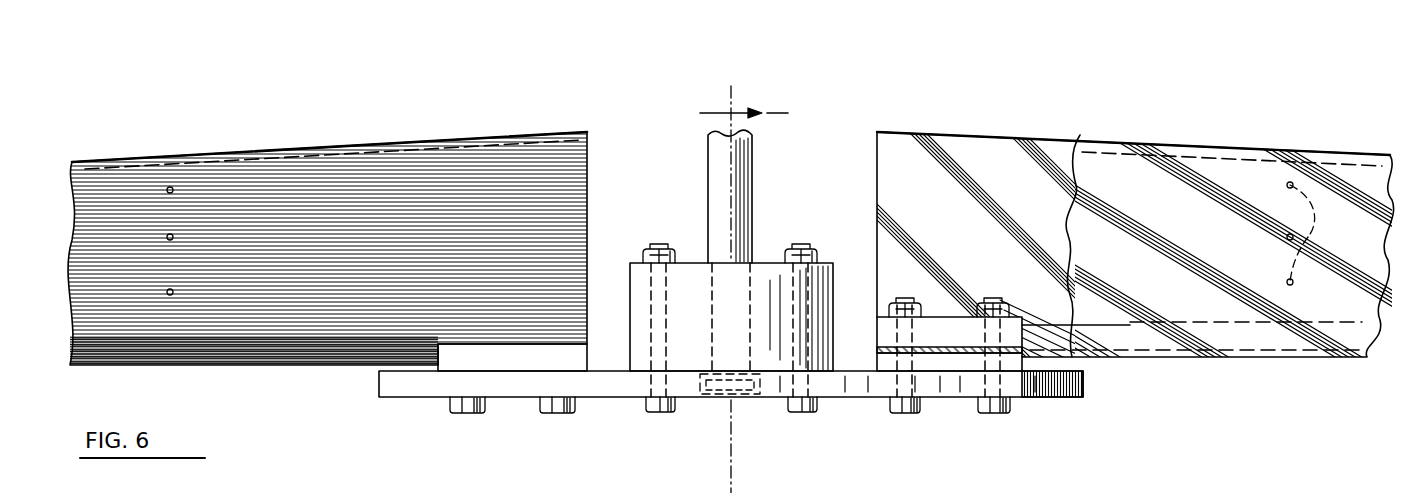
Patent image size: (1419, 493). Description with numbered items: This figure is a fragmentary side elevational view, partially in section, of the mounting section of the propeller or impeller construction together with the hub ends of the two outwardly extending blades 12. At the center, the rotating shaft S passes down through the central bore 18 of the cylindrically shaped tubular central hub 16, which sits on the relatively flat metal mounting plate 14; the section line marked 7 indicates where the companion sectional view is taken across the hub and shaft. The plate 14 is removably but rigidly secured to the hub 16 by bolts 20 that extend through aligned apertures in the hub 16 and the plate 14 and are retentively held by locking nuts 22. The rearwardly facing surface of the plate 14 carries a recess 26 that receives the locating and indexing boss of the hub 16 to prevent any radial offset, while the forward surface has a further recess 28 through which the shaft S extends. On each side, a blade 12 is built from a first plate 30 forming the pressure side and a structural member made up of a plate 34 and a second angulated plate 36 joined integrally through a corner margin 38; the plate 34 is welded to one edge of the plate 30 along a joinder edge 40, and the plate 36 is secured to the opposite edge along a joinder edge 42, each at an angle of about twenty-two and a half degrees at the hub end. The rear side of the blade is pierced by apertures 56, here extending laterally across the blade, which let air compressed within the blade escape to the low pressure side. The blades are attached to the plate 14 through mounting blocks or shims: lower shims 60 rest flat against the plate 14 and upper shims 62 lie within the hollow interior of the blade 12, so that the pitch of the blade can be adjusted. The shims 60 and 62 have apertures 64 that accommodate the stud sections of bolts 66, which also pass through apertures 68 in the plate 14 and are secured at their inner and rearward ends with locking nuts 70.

The propeller or impeller blade 12 is at (308, 138).
The mounting plate 14 is at (405, 388).
The central hub 16 is at (822, 300).
The central bore 18 is at (709, 290).
The bolt 20 is at (658, 412).
The locking nut 22 is at (647, 252).
The recess 26 is at (730, 370).
The recess 28 is at (752, 398).
The first plate 30 is at (1360, 285).
The plate 34 is at (262, 347).
The second angulated plate 36 is at (480, 163).
The corner margin 38 is at (150, 337).
The joinder edge 40 is at (342, 363).
The joinder edge 42 is at (242, 160).
The aperture 56 is at (170, 188).
The lower shim 60 is at (508, 360).
The upper shim 62 is at (938, 326).
The aperture 64 is at (1010, 322).
The bolt 66 is at (465, 414).
The aperture 68 is at (1044, 388).
The locking nut 70 is at (903, 300).
The section line 7- 7 is at (744, 290).
The shaft S is at (748, 180).